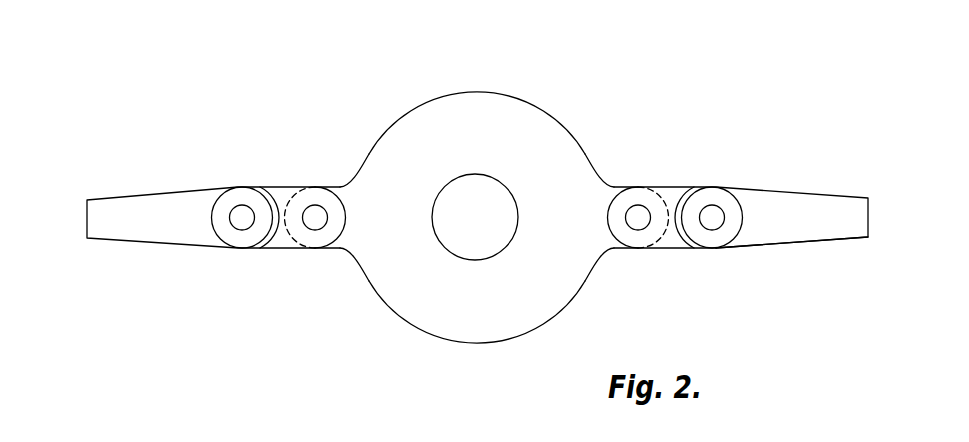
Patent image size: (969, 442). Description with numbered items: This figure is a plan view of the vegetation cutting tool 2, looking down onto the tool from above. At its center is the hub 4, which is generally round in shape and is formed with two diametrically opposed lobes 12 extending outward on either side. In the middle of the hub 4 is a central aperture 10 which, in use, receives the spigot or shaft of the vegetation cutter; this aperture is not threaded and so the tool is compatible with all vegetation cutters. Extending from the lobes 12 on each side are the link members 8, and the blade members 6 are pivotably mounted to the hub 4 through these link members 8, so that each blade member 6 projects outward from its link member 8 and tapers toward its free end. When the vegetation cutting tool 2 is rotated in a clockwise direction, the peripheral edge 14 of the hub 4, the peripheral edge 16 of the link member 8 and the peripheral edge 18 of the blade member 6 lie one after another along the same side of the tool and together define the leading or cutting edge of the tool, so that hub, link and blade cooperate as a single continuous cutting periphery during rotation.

The vegetation cutting tool 2 is at (565, 82).
The hub 4 is at (418, 111).
The blade member 6 is at (822, 200).
The link member 8 is at (277, 186).
The central aperture 10 is at (467, 175).
The lobe 12 is at (340, 186).
The peripheral edge of hub 14 is at (612, 250).
The peripheral edge of link member 16 is at (677, 250).
The peripheral edge of blade member 18 is at (812, 243).